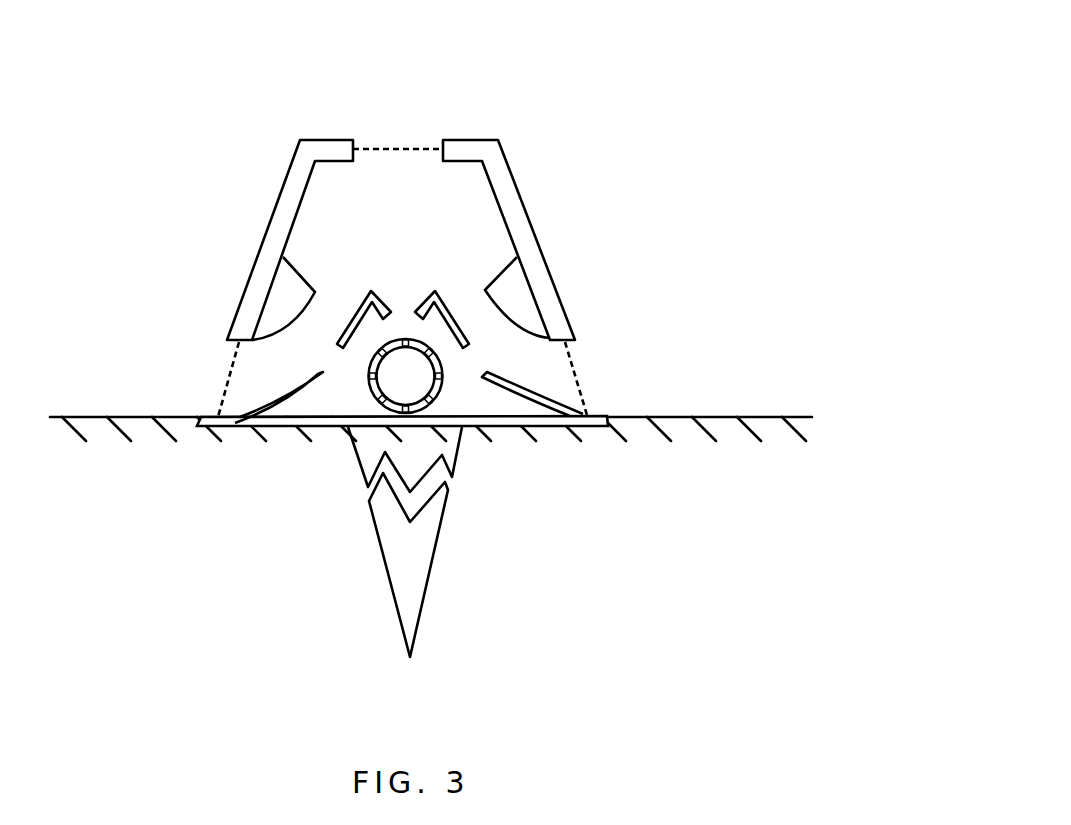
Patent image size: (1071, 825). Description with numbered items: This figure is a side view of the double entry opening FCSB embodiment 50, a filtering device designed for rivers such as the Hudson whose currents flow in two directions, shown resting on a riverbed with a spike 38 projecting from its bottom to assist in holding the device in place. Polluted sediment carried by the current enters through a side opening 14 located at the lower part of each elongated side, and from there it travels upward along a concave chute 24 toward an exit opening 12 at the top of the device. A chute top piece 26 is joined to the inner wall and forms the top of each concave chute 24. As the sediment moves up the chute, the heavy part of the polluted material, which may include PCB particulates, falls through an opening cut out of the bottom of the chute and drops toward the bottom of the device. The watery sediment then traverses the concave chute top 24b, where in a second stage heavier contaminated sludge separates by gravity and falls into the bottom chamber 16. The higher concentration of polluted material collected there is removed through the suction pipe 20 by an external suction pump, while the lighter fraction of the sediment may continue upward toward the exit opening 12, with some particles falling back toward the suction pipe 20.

The exit opening 12 is at (443, 140).
The side opening 14 is at (227, 342).
The bottom chamber 16 is at (348, 383).
The suction pipe 20 is at (442, 387).
The concave chute 24 is at (562, 407).
The concave chute top 24b is at (448, 312).
The chute top piece 26 is at (523, 303).
The spike 38 is at (430, 580).
The double entry opening FCSB embodiment 50 is at (592, 114).